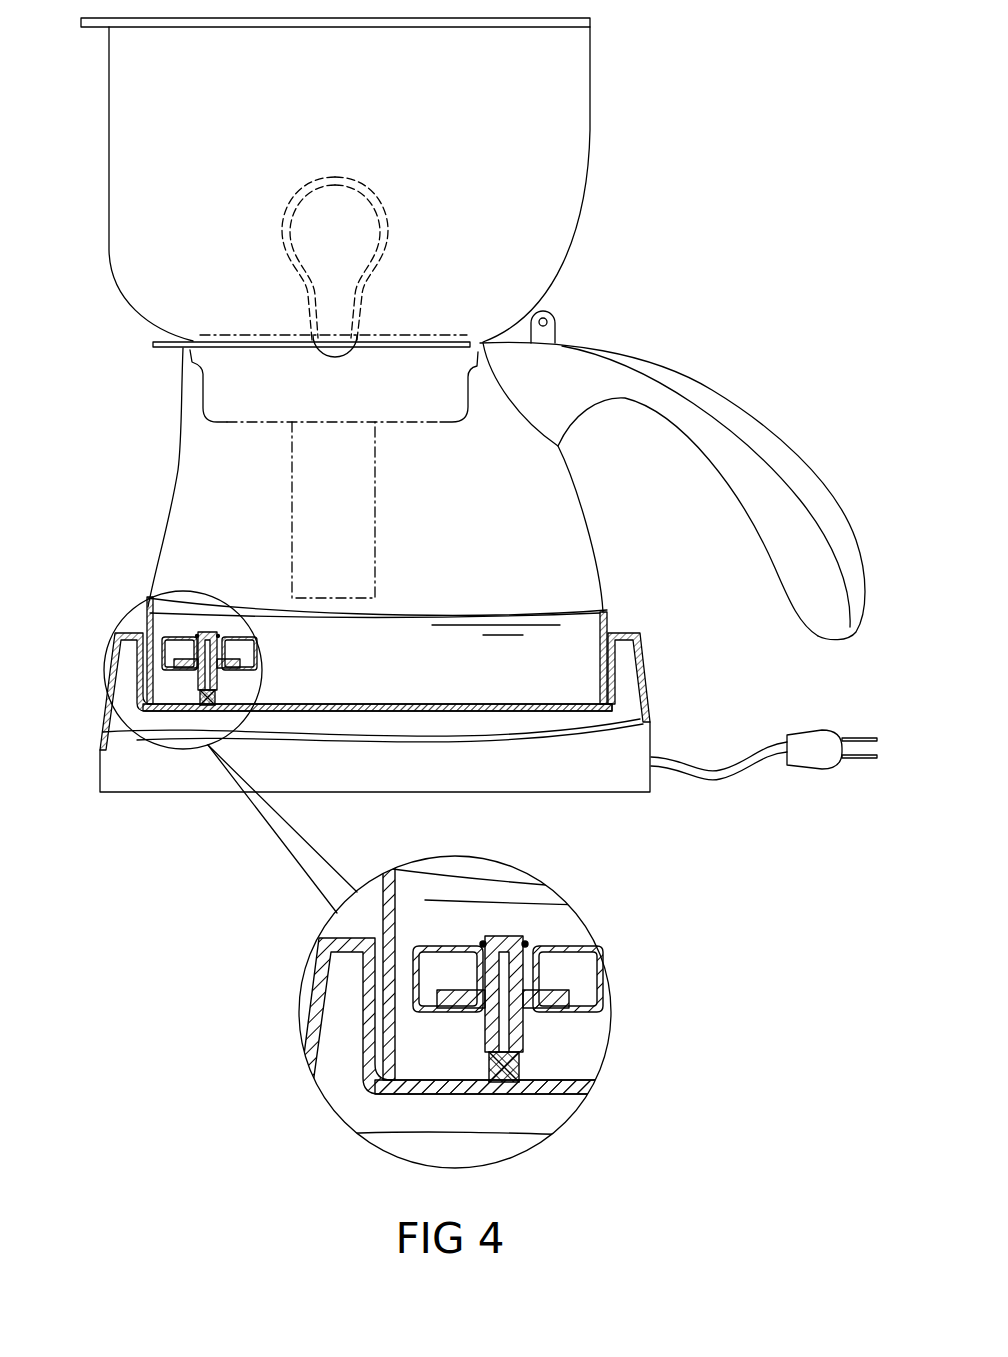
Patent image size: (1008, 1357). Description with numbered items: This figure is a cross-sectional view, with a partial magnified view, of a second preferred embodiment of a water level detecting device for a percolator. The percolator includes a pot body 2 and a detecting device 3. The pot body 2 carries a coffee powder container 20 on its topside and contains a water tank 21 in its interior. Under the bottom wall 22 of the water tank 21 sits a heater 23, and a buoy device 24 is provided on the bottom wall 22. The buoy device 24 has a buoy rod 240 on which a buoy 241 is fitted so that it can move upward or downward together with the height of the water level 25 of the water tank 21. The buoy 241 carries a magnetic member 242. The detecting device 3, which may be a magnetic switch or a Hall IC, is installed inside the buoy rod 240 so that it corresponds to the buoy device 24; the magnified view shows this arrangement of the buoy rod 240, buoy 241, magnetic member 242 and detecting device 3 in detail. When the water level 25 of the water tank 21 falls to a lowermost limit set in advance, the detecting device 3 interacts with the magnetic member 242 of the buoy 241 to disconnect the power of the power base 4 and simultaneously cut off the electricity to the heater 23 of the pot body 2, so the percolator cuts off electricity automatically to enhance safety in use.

The pot body 2 is at (170, 462).
The coffee powder container 20 is at (548, 130).
The water tank 21 is at (534, 584).
The bottom wall 22 is at (458, 698).
The heater 23 is at (567, 717).
The buoy device 24 is at (190, 633).
The buoy rod 240 is at (205, 632).
The buoy 241 is at (256, 658).
The magnetic member 242 is at (224, 669).
The water level 25 is at (262, 618).
The detecting device 3 is at (197, 708).
The power base 4 is at (643, 706).